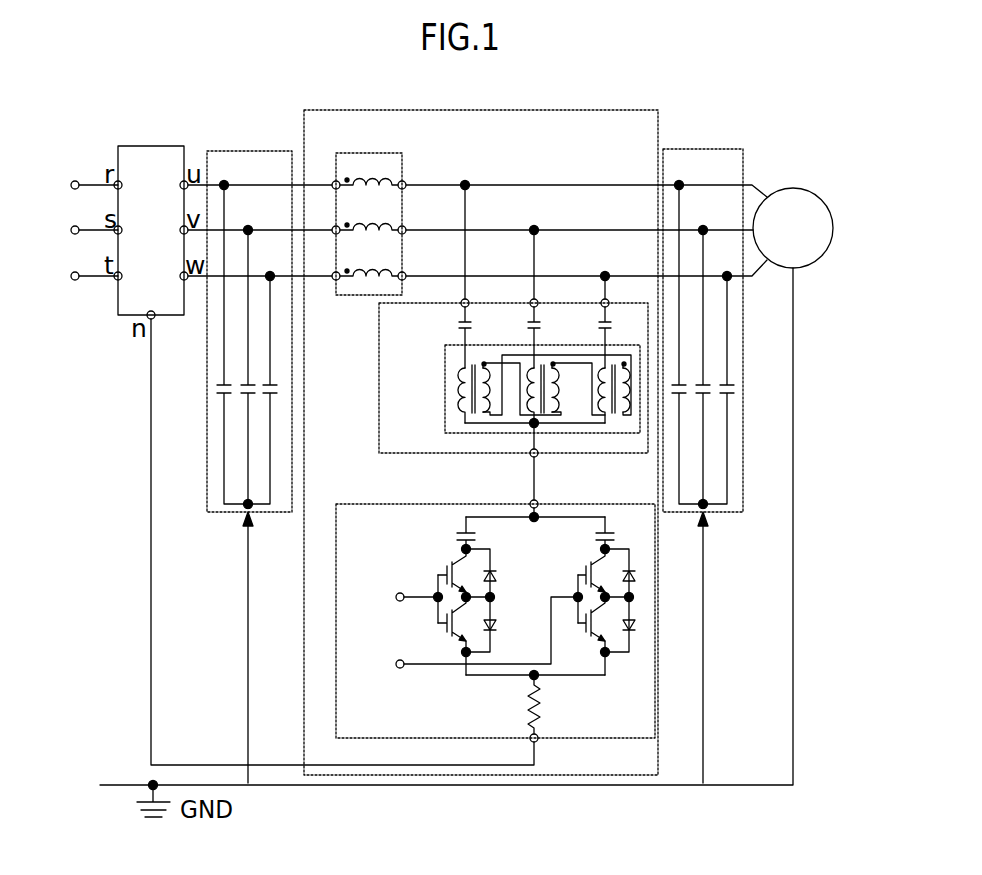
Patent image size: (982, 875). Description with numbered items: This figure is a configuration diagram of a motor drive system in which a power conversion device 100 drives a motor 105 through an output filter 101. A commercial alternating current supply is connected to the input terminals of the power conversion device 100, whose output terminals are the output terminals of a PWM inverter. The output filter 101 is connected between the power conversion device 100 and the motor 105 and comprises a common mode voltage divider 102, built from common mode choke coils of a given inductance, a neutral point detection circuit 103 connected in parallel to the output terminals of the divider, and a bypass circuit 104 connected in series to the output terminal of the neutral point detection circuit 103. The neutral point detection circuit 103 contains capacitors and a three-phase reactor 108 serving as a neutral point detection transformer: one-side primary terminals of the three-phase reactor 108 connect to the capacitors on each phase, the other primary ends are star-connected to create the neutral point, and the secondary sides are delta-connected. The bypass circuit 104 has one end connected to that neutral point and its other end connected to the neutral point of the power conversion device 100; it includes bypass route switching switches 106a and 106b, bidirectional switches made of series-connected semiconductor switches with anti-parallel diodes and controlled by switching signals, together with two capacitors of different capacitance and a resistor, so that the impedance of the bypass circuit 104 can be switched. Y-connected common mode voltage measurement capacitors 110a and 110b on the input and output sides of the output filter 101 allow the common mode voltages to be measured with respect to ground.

The power conversion device 100 is at (153, 232).
The output filter 101 is at (478, 110).
The common mode voltage divider 102 is at (363, 155).
The neutral point detection circuit 103 is at (378, 410).
The bypass circuit 104 is at (495, 604).
The motor 105 is at (793, 228).
The bypass route switching switch 106a is at (438, 577).
The bypass route switching switch 106b is at (568, 586).
The three-phase reactor 108 is at (453, 345).
The common mode voltage measurement capacitor 110a is at (220, 150).
The common mode voltage measurement capacitor 110b is at (672, 149).